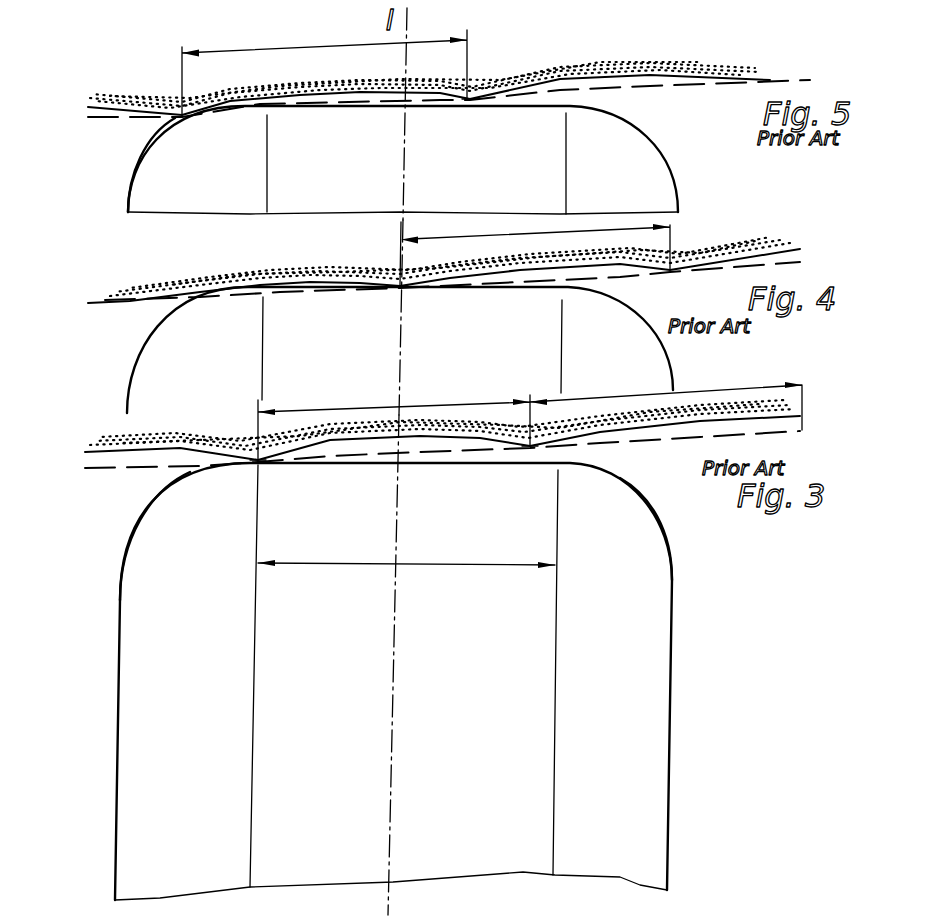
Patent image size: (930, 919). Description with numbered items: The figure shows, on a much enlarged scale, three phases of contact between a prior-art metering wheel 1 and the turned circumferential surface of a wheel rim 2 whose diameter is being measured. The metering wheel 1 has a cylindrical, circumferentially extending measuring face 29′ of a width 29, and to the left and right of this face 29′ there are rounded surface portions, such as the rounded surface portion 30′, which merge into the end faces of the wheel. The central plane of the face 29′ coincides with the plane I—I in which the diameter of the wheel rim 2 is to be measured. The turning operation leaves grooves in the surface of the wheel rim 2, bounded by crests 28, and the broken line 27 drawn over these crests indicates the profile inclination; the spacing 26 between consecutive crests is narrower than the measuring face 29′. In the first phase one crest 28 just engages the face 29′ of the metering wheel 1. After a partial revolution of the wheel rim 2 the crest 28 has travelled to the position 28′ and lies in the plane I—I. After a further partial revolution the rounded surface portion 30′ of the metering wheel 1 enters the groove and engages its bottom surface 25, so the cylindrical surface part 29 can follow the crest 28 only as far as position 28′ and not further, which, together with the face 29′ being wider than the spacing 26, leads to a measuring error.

In FIG. 5, the metering wheel 1 is at (620, 175).
In FIG. 4, the metering wheel 1 is at (620, 380).
In FIG. 3, the metering wheel 1 is at (630, 735).
In FIG. 5, the wheel rim 2 is at (703, 70).
In FIG. 4, the wheel rim 2 is at (450, 266).
In FIG. 3, the wheel rim 2 is at (442, 425).
In FIG. 5, the bottom surface 25 is at (98, 108).
In FIG. 4, the bottom surface 25 is at (160, 295).
In FIG. 3, the bottom surface 25 is at (140, 453).
In FIG. 5, the spacing 26 is at (270, 49).
In FIG. 4, the spacing 26 is at (543, 233).
In FIG. 3, the spacing 26 is at (258, 401).
In FIG. 5, the profile inclination line 27 is at (635, 88).
In FIG. 4, the profile inclination line 27 is at (730, 263).
In FIG. 3, the profile inclination line 27 is at (685, 433).
In FIG. 3, the crest 28 is at (257, 459).
In FIG. 4, the crest position 28′ is at (400, 284).
In FIG. 3, the width 29 is at (321, 565).
In FIG. 3, the measuring face 29′ is at (377, 462).
In FIG. 5, the rounded surface portion 30′ is at (137, 182).
In FIG. 3, the rounded surface portion 30′ is at (137, 530).